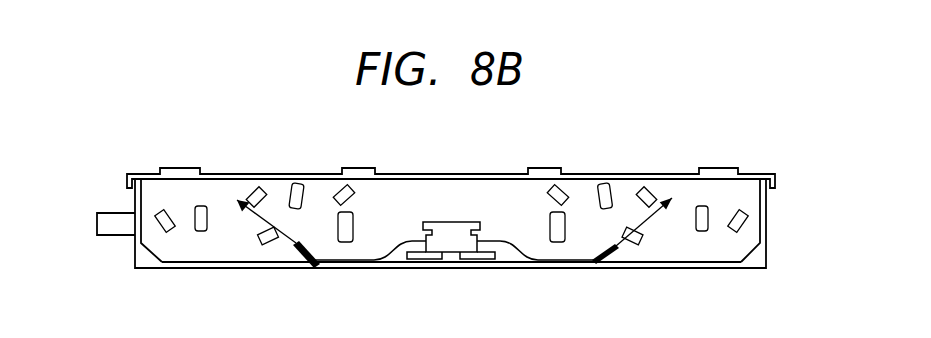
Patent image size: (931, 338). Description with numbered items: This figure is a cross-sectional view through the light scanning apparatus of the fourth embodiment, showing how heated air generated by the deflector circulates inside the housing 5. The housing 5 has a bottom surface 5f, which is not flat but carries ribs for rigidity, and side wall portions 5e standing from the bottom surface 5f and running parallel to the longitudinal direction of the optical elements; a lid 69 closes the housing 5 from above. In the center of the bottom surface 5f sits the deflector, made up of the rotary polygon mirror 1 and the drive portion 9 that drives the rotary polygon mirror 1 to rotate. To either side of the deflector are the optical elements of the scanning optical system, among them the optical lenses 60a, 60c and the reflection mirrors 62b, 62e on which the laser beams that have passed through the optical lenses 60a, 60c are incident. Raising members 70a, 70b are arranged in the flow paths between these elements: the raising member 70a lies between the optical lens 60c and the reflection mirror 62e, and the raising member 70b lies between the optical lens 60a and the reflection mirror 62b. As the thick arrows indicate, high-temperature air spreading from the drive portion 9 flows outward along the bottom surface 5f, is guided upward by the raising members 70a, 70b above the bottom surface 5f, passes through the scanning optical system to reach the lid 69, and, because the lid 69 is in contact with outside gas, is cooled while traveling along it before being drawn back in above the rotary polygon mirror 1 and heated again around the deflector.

The rotary polygon mirror 1 is at (451, 226).
The housing 5 is at (429, 258).
The side wall portion 5e is at (146, 257).
The bottom surface 5f is at (688, 265).
The drive portion 9 is at (452, 243).
The optical lens 60a is at (348, 218).
The optical lens 60c is at (560, 220).
The reflection mirror 62b is at (267, 246).
The reflection mirror 62e is at (628, 258).
The lid 69 is at (485, 173).
The raising member 70a is at (603, 268).
The raising member 70b is at (306, 262).